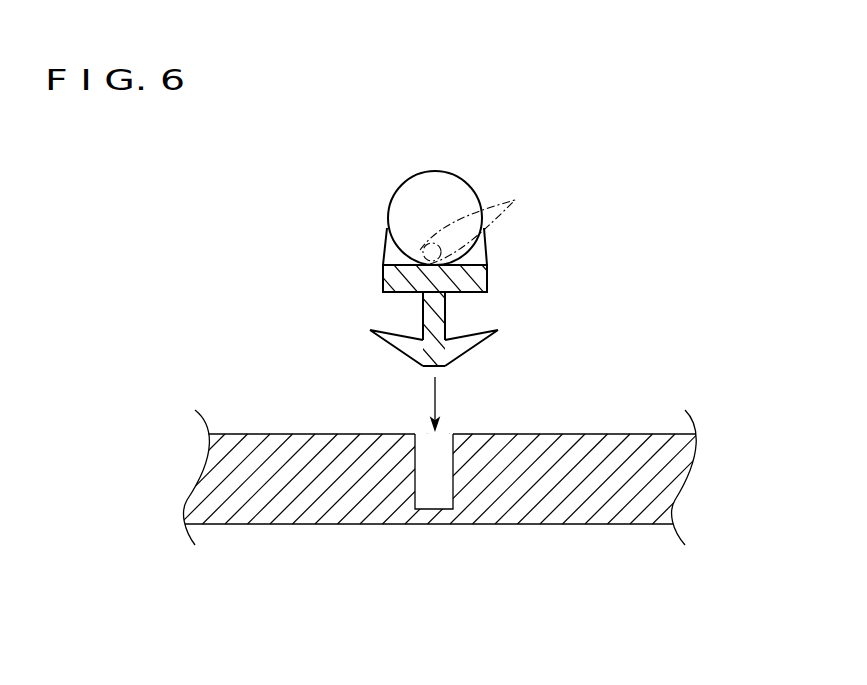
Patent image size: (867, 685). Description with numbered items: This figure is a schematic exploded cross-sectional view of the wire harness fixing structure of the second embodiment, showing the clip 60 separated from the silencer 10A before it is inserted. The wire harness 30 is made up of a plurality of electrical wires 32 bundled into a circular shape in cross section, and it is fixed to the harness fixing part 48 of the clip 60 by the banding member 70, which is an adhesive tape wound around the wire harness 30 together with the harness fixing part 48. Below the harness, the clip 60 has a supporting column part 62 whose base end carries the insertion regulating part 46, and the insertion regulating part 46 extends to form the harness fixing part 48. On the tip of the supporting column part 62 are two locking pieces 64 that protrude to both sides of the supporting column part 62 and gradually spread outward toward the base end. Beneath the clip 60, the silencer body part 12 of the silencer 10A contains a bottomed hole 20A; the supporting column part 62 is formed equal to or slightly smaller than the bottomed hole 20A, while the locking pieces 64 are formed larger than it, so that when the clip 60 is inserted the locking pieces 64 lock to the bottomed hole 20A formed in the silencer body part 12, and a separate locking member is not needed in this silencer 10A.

The silencer 10A is at (498, 527).
The silencer body part 12 is at (606, 511).
The bottomed hole 20A is at (450, 478).
The wire harness 30 is at (475, 242).
The electrical wires 32 is at (480, 220).
The insertion regulating part 46 is at (427, 314).
The harness fixing part 48 is at (480, 273).
The clip 60 is at (480, 329).
The supporting column part 62 is at (437, 311).
The locking piece 64 is at (463, 350).
The banding member 70 is at (383, 252).